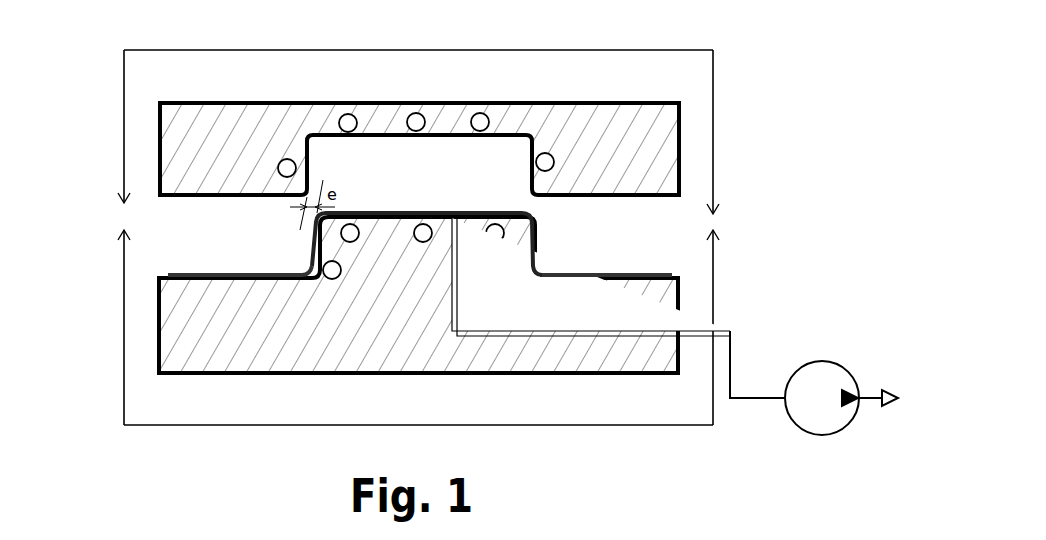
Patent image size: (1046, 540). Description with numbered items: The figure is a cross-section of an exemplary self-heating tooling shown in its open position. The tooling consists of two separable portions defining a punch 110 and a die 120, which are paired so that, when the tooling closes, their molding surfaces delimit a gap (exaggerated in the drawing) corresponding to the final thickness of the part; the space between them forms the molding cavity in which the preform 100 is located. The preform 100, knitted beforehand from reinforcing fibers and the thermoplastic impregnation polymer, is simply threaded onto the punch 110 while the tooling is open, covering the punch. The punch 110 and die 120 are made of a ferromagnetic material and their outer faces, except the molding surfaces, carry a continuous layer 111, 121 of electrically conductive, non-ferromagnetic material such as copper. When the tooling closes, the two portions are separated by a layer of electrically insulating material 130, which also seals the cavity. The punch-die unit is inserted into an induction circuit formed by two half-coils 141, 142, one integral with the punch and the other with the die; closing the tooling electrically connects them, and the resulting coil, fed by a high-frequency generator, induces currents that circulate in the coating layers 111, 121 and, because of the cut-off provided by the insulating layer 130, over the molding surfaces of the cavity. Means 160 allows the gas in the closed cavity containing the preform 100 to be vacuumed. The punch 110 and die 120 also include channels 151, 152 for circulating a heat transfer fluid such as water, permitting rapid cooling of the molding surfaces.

The preform 100 is at (533, 228).
The punch 110 is at (366, 341).
The continuous layer 111 is at (275, 378).
The die 120 is at (362, 103).
The continuous layer 121 is at (301, 101).
The layer of electrically insulating material 130 is at (188, 274).
The half-coil 141 is at (713, 88).
The half-coil 142 is at (713, 323).
The channels 151 is at (416, 112).
The channels 152 is at (510, 277).
The vacuum means 160 is at (822, 435).